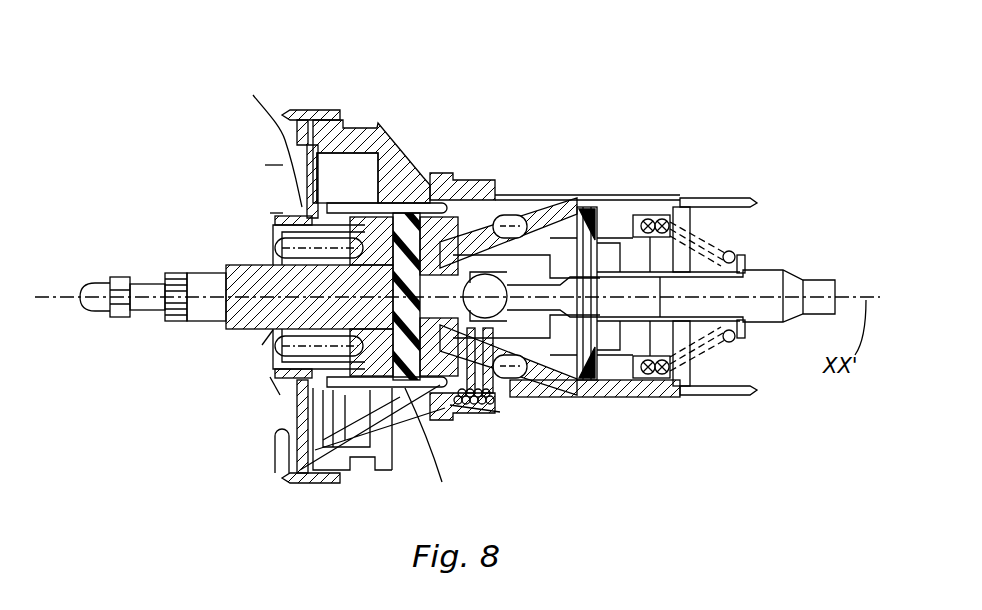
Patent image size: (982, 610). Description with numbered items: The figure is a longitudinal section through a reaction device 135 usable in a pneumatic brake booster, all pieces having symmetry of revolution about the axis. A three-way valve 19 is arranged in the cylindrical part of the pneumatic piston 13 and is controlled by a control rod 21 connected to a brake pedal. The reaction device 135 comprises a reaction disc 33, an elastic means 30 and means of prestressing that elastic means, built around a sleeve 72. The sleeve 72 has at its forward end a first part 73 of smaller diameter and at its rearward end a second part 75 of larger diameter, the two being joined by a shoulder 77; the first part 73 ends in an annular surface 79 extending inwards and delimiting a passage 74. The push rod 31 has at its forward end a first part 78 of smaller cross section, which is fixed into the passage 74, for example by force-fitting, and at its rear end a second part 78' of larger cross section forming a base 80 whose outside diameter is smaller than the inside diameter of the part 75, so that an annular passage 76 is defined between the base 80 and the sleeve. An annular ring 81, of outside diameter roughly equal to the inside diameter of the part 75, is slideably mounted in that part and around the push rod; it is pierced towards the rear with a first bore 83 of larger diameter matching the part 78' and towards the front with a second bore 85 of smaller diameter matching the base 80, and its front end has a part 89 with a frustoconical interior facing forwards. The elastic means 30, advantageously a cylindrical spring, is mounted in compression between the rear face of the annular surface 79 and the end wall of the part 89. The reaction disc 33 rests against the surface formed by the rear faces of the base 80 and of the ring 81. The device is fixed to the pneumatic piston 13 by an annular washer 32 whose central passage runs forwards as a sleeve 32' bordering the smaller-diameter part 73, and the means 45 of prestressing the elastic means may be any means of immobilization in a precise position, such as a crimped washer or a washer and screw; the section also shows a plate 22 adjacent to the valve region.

The pneumatic piston 13 is at (420, 175).
The three-way valve 19 is at (630, 197).
The control rod 21 is at (770, 305).
The plate 22 is at (540, 228).
The elastic means 30 is at (262, 345).
The push rod 31 is at (137, 320).
The annular washer 32 is at (296, 462).
The fan portion 32' is at (246, 439).
The reaction disc 33 is at (527, 230).
The means of prestressing 45 is at (340, 397).
The sleeve 72 is at (349, 183).
The first part of smaller diameter 73 is at (272, 227).
The passage 74 is at (237, 340).
The second part of larger diameter 75 is at (478, 228).
The annular passage 76 is at (352, 200).
The shoulder 77 is at (305, 207).
The first part of smaller cross section 78 is at (145, 264).
The second part of larger cross section 78' is at (370, 476).
The annular surface 79 is at (272, 252).
The base 80 is at (420, 413).
The annular ring 81 is at (380, 460).
The first bore 83 is at (430, 176).
The second bore 85 is at (262, 272).
The part with frustoconical interior shape 89 is at (275, 210).
The reaction device 135 is at (274, 225).